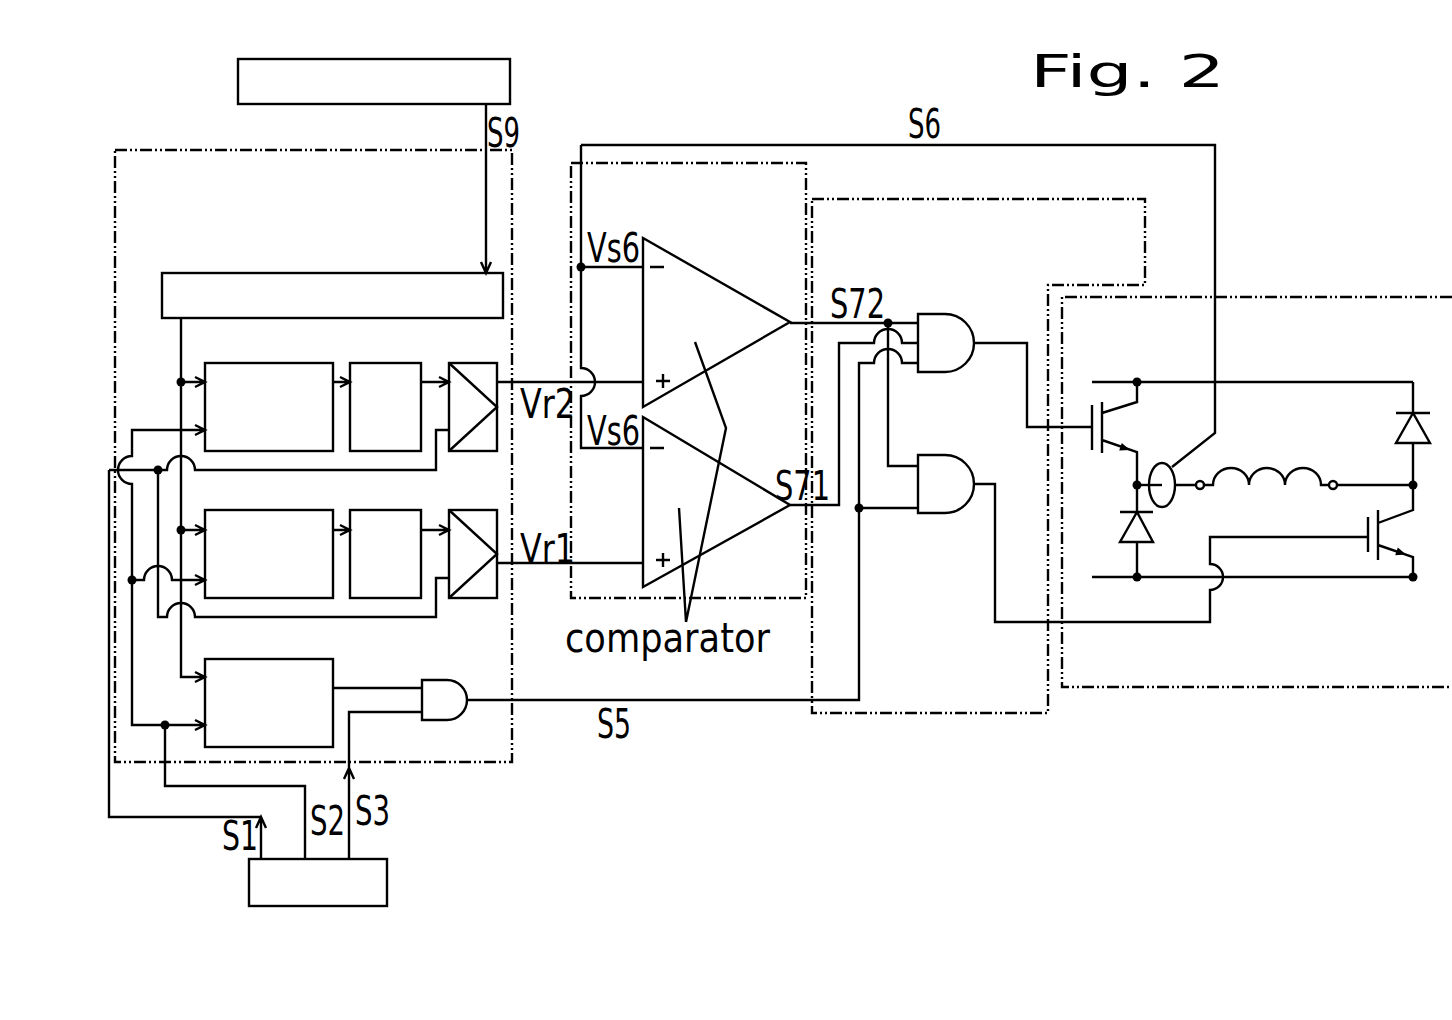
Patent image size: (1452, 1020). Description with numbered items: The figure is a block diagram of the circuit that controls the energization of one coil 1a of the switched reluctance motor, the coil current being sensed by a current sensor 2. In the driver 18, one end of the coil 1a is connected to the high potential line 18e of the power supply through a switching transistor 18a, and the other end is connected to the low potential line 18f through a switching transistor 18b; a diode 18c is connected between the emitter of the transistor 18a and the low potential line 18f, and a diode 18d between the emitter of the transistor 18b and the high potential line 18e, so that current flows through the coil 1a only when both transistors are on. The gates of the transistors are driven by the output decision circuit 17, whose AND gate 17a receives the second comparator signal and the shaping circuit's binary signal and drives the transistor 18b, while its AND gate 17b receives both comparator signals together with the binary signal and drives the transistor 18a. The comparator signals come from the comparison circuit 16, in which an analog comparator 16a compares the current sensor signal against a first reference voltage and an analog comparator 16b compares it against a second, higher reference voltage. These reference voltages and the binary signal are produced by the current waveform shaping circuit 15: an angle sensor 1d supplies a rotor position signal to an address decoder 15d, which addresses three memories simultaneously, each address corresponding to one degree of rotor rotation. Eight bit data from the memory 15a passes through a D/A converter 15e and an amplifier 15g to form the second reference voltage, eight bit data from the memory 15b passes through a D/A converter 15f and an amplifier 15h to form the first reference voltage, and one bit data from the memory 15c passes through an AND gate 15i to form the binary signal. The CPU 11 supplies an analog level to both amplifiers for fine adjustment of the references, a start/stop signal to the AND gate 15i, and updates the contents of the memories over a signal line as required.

The angle sensor 1d is at (394, 82).
The current waveform shaping circuit 15 is at (313, 436).
The memory 15a is at (269, 387).
The memory 15b is at (269, 534).
The memory 15c is at (269, 681).
The address decoder 15d is at (332, 276).
The D/A converter 15e is at (385, 387).
The D/A converter 15f is at (385, 534).
The amplifier 15g is at (475, 384).
The amplifier 15h is at (475, 533).
The AND gate 15i is at (401, 681).
The comparison circuit 16 is at (707, 374).
The analog comparator 16a is at (716, 502).
The analog comparator 16b is at (716, 322).
The output decision circuit 17 is at (984, 434).
The AND gate 17a is at (946, 508).
The AND gate 17b is at (946, 367).
The driver 18 is at (1257, 470).
The switching transistor (IGBT) 18a is at (1136, 407).
The switching transistor (IGBT) 18b is at (1403, 556).
The diode 18c is at (1110, 531).
The diode 18d is at (1383, 433).
The high potential line 18e is at (1333, 382).
The low potential line 18f is at (1292, 580).
The coil 1a is at (1294, 458).
The current sensor 2 is at (1168, 500).
The CPU 11 is at (337, 884).